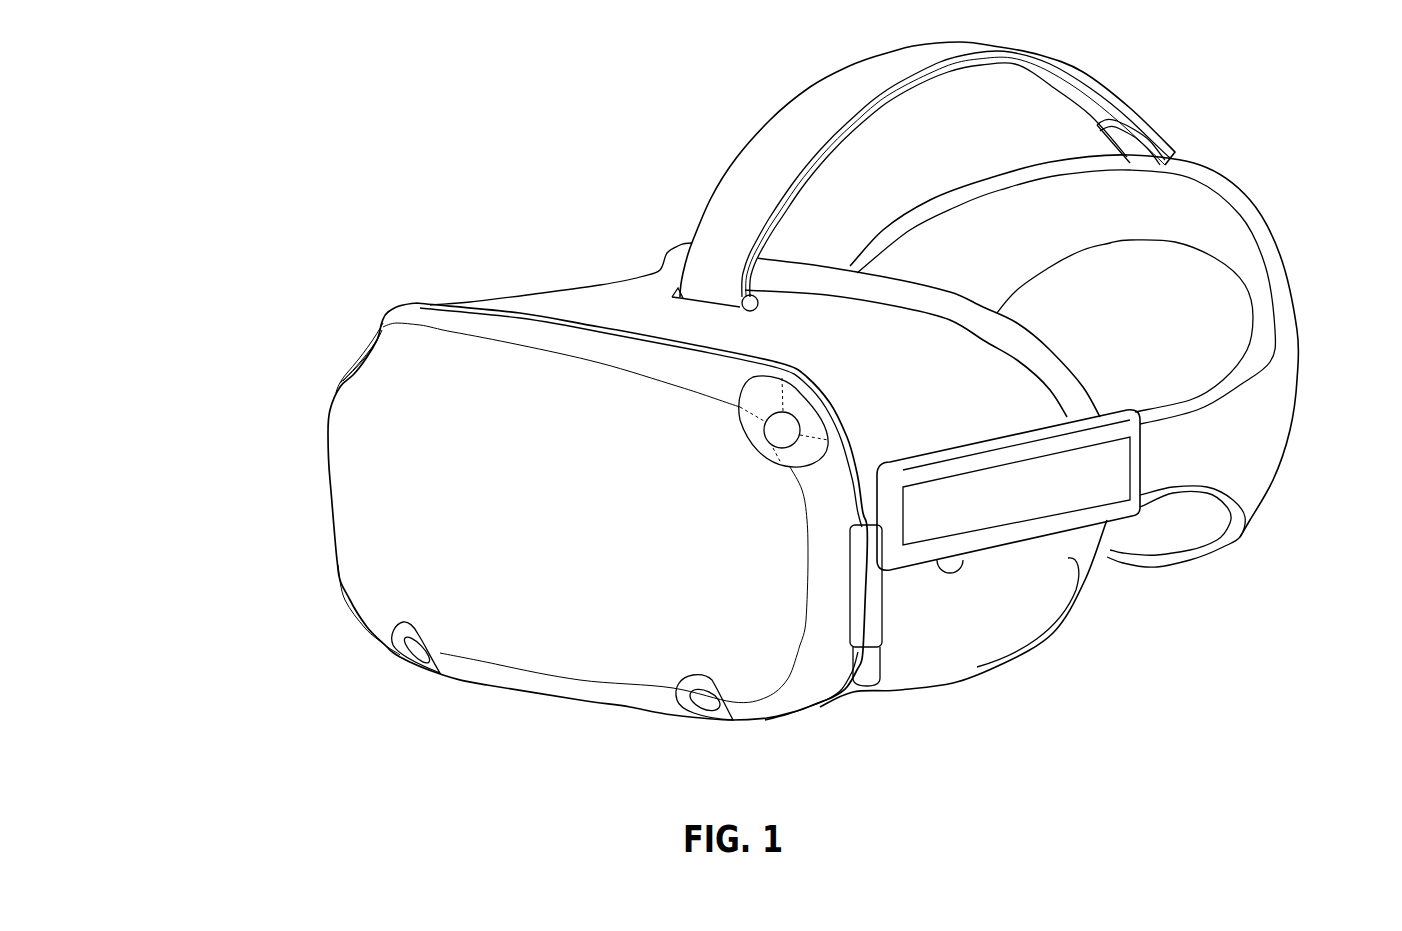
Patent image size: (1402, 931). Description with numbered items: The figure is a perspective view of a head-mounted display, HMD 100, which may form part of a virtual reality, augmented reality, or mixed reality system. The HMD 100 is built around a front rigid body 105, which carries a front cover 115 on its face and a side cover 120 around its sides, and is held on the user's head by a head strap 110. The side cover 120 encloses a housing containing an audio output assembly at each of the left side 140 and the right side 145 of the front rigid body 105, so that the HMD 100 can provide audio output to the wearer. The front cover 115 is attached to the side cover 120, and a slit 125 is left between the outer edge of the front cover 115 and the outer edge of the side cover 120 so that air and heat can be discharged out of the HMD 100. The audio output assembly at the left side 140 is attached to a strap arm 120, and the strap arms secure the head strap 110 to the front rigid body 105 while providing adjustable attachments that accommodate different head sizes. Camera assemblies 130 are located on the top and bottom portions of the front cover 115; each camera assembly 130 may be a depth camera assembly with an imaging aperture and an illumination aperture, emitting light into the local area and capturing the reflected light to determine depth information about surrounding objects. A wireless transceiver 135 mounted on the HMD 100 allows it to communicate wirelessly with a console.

The head-mounted display 100 is at (449, 80).
The front rigid body 105 is at (431, 313).
The head strap 110 is at (1237, 207).
The front cover 115 is at (350, 483).
The side cover 120 is at (1181, 721).
The slit 125 is at (497, 312).
The camera assembly 130 is at (410, 652).
The wireless transceiver 135 is at (870, 673).
The left side 140 is at (1020, 587).
The right side 145 is at (330, 400).